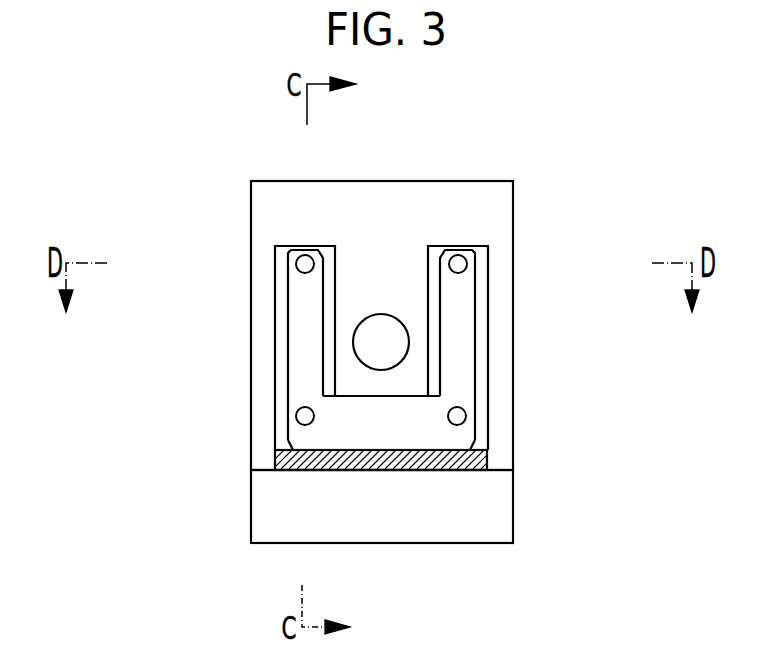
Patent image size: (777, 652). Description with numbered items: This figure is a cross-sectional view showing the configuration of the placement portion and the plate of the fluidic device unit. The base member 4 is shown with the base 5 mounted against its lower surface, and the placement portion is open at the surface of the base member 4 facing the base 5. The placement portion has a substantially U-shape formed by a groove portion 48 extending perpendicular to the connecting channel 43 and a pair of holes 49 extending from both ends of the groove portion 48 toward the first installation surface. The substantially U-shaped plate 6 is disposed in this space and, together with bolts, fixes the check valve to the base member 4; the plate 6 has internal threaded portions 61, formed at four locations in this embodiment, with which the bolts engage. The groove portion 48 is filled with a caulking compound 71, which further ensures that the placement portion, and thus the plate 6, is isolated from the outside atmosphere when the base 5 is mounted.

The base member 4 is at (481, 180).
The base 5 is at (513, 523).
The plate 6 is at (355, 437).
The connecting channel 43 is at (381, 318).
The groove portion 48 is at (480, 438).
The holes 49 is at (281, 330).
The internal threaded portions 61 is at (296, 264).
The caulking compound 71 is at (420, 470).